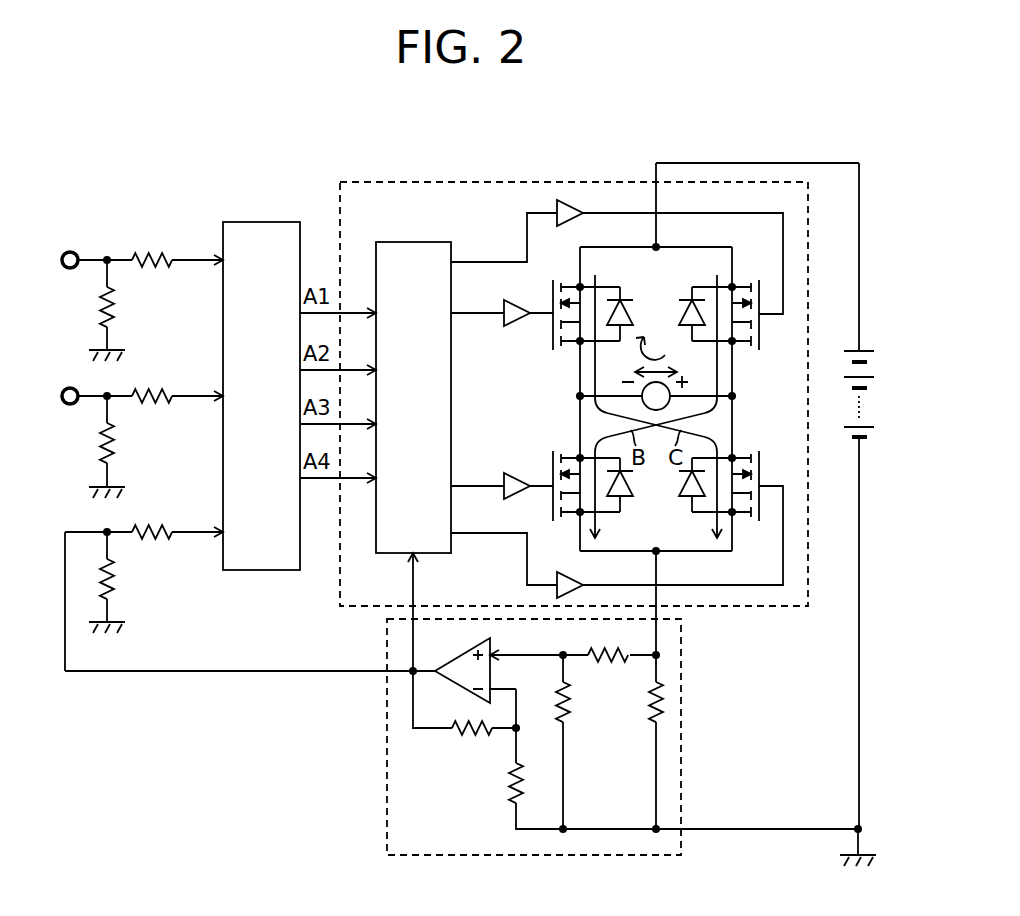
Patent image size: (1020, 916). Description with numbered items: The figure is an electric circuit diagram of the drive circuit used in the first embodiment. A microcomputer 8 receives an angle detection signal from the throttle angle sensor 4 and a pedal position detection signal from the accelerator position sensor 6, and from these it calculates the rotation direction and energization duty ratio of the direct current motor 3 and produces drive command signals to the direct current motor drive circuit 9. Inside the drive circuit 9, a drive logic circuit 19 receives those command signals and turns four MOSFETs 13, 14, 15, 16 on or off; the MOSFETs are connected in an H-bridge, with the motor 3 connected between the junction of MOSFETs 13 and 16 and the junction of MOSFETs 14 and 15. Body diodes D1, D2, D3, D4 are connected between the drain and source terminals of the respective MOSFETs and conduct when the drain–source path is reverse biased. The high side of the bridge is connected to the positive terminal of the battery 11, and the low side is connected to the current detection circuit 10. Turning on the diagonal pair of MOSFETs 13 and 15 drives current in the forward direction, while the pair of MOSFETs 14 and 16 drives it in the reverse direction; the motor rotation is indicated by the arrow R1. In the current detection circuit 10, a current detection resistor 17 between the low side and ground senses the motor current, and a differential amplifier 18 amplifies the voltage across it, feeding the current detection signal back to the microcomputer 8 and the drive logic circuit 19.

The direct current motor 3 is at (669, 405).
The throttle angle sensor 4 is at (71, 251).
The accelerator position sensor 6 is at (68, 387).
The microcomputer 8 is at (261, 222).
The direct current motor drive circuit 9 is at (340, 182).
The current detection circuit 10 is at (681, 665).
The power source (battery) 11 is at (870, 351).
The MOSFET 13 is at (745, 284).
The MOSFET 14 is at (567, 284).
The MOSFET 15 is at (563, 456).
The MOSFET 16 is at (743, 458).
The current detection resistor 17 is at (660, 712).
The differential amplifier 18 is at (465, 770).
The drive logic circuit 19 is at (416, 242).
The body diode D1 is at (682, 299).
The body diode D2 is at (629, 299).
The body diode D3 is at (628, 498).
The body diode D4 is at (684, 498).
The rotation direction R1 is at (668, 352).